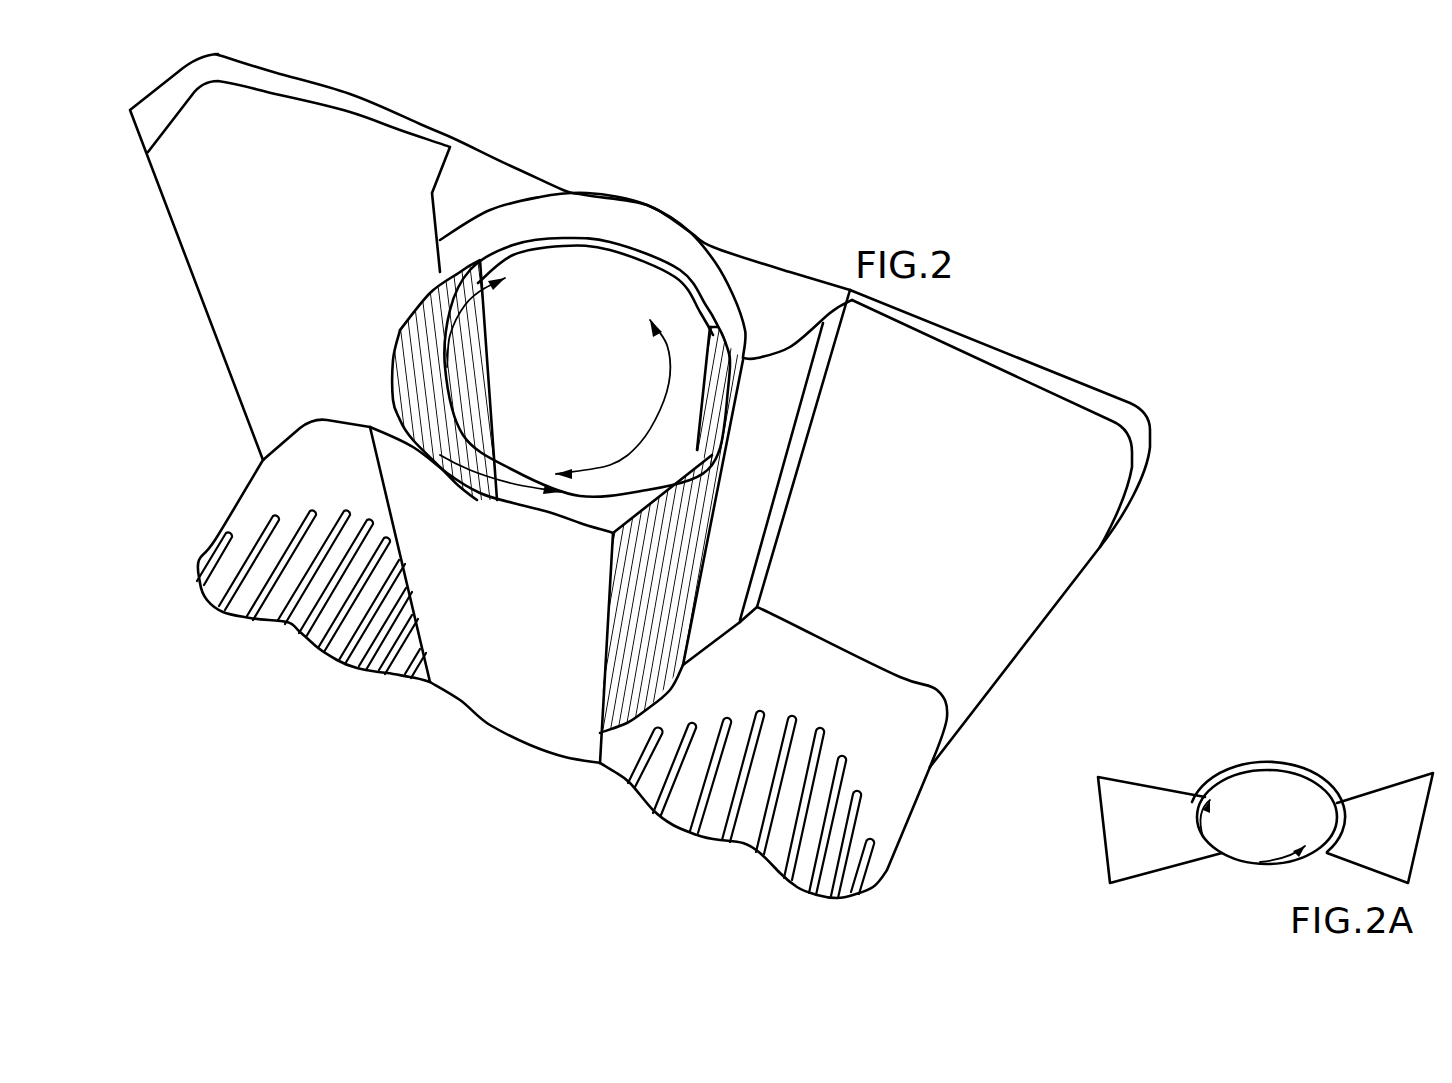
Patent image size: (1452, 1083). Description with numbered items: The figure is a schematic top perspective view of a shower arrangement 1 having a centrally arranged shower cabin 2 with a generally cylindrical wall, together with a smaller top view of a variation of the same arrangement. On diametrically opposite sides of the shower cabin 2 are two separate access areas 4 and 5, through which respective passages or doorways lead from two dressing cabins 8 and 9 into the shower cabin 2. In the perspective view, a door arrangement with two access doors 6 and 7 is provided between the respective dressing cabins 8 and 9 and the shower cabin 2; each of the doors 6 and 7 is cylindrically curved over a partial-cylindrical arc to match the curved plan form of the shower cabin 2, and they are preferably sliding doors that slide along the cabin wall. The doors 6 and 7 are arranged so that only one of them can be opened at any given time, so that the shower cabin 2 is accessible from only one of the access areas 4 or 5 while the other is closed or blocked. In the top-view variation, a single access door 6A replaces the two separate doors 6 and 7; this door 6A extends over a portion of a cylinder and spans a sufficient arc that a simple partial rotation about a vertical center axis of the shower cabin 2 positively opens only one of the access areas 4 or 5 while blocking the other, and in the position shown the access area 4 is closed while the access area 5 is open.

In FIG. 2, the shower arrangement 1 is at (742, 176).
In FIG. 2, the shower cabin 2 is at (580, 398).
In FIG. 2A, the shower cabin 2 is at (1277, 780).
In FIG. 2, the access area 4 is at (400, 290).
In FIG. 2A, the access area 4 is at (1200, 821).
In FIG. 2, the access area 5 is at (730, 437).
In FIG. 2A, the access area 5 is at (1338, 827).
In FIG. 2, the door 6 is at (398, 333).
In FIG. 2A, the single access door 6A is at (1240, 855).
In FIG. 2, the door 7 is at (697, 537).
In FIG. 2, the dressing cabin 8 is at (203, 394).
In FIG. 2A, the dressing cabin 8 is at (1135, 836).
In FIG. 2, the dressing cabin 9 is at (995, 712).
In FIG. 2A, the dressing cabin 9 is at (1415, 826).